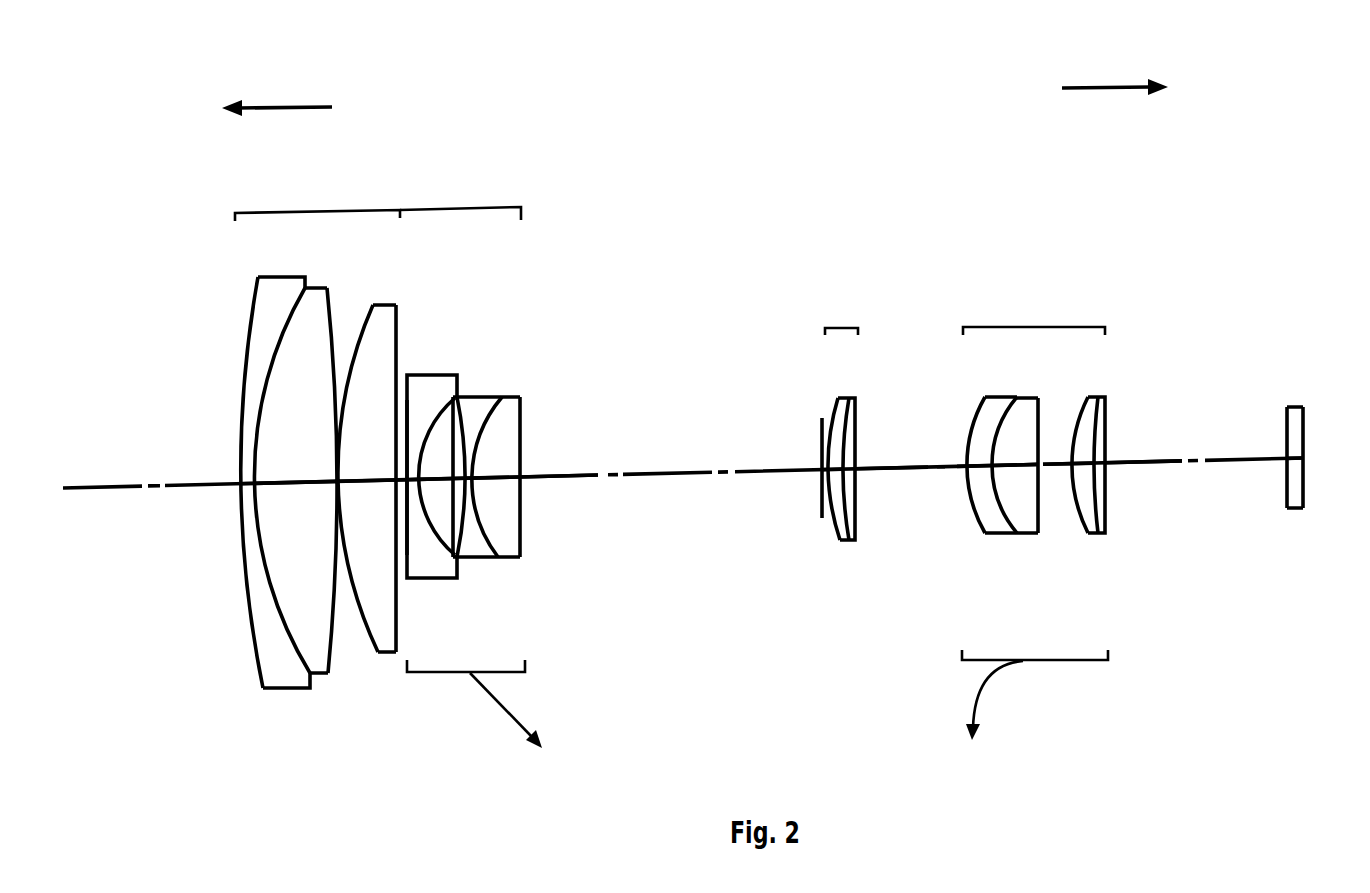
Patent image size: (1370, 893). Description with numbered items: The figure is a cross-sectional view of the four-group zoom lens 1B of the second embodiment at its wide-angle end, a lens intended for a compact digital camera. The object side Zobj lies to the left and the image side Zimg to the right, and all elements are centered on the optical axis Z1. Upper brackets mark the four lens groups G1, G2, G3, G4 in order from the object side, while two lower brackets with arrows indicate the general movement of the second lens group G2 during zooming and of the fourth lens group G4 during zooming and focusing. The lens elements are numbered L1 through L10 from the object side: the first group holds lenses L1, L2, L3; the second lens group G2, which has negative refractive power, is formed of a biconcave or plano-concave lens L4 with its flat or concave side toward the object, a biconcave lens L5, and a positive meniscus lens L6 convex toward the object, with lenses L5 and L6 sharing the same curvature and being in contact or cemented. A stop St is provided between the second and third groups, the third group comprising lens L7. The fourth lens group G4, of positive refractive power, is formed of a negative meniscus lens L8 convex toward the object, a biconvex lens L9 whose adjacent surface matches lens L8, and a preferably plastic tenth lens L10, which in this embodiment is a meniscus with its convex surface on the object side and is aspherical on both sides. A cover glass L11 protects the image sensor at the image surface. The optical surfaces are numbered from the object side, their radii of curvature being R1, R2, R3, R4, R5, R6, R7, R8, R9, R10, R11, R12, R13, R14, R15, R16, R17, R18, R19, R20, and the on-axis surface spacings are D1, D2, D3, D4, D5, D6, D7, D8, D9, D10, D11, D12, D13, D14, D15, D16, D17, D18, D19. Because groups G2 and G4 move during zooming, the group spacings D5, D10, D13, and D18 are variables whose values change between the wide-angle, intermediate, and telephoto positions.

The zoom lens 1B is at (1282, 256).
The object side Zobj is at (297, 108).
The image side Zimg is at (1095, 88).
The optical axis Z1 is at (117, 490).
The first lens group G1 is at (308, 468).
The second lens group G2 is at (488, 461).
The third lens group G3 is at (834, 460).
The fourth lens group G4 is at (1049, 514).
The stop St is at (820, 440).
The first lens L1 is at (280, 296).
The second lens L2 is at (315, 302).
The third lens L3 is at (385, 313).
The fourth lens L4 is at (433, 393).
The fifth lens L5 is at (477, 403).
The sixth lens L6 is at (511, 403).
The seventh lens L7 is at (847, 393).
The eighth lens L8 is at (998, 407).
The ninth lens L9 is at (1027, 407).
The tenth lens L10 is at (1093, 404).
The cover glass L11 is at (1299, 417).
The on-axis surface spacing D1 is at (244, 481).
The on-axis surface spacing D2 is at (295, 499).
The on-axis surface spacing D3 is at (330, 480).
The on-axis surface spacing D4 is at (367, 498).
The on-axis surface spacing D5 is at (392, 479).
The on-axis surface spacing D6 is at (413, 483).
The on-axis surface spacing D7 is at (440, 496).
The on-axis surface spacing D8 is at (473, 447).
The on-axis surface spacing D9 is at (497, 478).
The on-axis surface spacing D10 is at (622, 491).
The on-axis surface spacing D11 is at (822, 458).
The on-axis surface spacing D12 is at (858, 453).
The on-axis surface spacing D13 is at (970, 455).
The on-axis surface spacing D14 is at (975, 452).
The on-axis surface spacing D15 is at (980, 490).
The on-axis surface spacing D16 is at (1088, 445).
The on-axis surface spacing D17 is at (1087, 476).
The on-axis surface spacing D18 is at (1163, 481).
The on-axis surface spacing D19 is at (1290, 447).
The radius of curvature R1 is at (258, 674).
The radius of curvature R2 is at (303, 640).
The radius of curvature R3 is at (328, 652).
The radius of curvature R4 is at (372, 625).
The radius of curvature R5 is at (396, 620).
The radius of curvature R6 is at (405, 575).
The radius of curvature R7 is at (456, 562).
The radius of curvature R8 is at (460, 558).
The radius of curvature R9 is at (496, 558).
The radius of curvature R10 is at (521, 532).
The radius of curvature R11 is at (822, 498).
The radius of curvature R12 is at (838, 530).
The radius of curvature R13 is at (855, 512).
The radius of curvature R14 is at (982, 535).
The radius of curvature R15 is at (1008, 537).
The radius of curvature R16 is at (1040, 508).
The radius of curvature R17 is at (1087, 535).
The radius of curvature R18 is at (1105, 518).
The radius of curvature R19 is at (1285, 493).
The radius of curvature R20 is at (1303, 480).